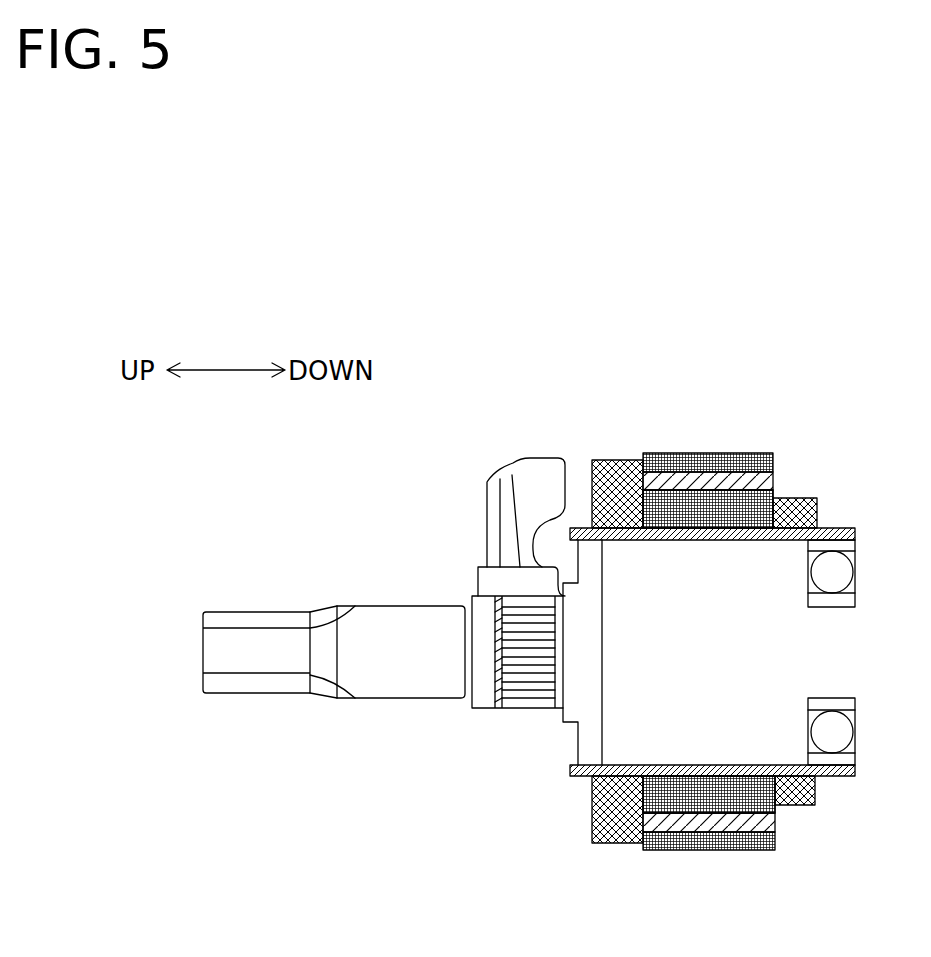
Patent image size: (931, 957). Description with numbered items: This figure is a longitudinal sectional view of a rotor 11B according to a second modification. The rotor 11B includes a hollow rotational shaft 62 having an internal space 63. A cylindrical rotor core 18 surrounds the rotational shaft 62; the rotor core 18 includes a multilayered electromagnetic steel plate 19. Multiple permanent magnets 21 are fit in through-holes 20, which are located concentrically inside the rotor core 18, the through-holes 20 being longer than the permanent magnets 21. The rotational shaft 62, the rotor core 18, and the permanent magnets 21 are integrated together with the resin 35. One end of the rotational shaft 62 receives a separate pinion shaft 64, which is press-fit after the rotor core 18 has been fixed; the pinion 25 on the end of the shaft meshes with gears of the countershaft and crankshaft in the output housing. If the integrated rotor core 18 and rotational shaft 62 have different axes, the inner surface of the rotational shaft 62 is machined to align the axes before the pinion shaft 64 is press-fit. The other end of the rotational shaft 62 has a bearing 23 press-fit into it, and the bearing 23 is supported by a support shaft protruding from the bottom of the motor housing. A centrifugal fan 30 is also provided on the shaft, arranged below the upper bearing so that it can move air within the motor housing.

The rotor 11B is at (497, 375).
The rotor core 18 is at (714, 645).
The electromagnetic steel plate 19 is at (658, 852).
The through-holes 20 is at (738, 452).
The permanent magnets 21 is at (770, 455).
The bearing 23 is at (835, 573).
The pinion 25 is at (248, 618).
The centrifugal fan 30 is at (527, 458).
The resin 35 is at (612, 458).
The hollow rotational shaft 62 is at (630, 458).
The internal space 63 is at (765, 583).
The pinion shaft 64 is at (398, 627).